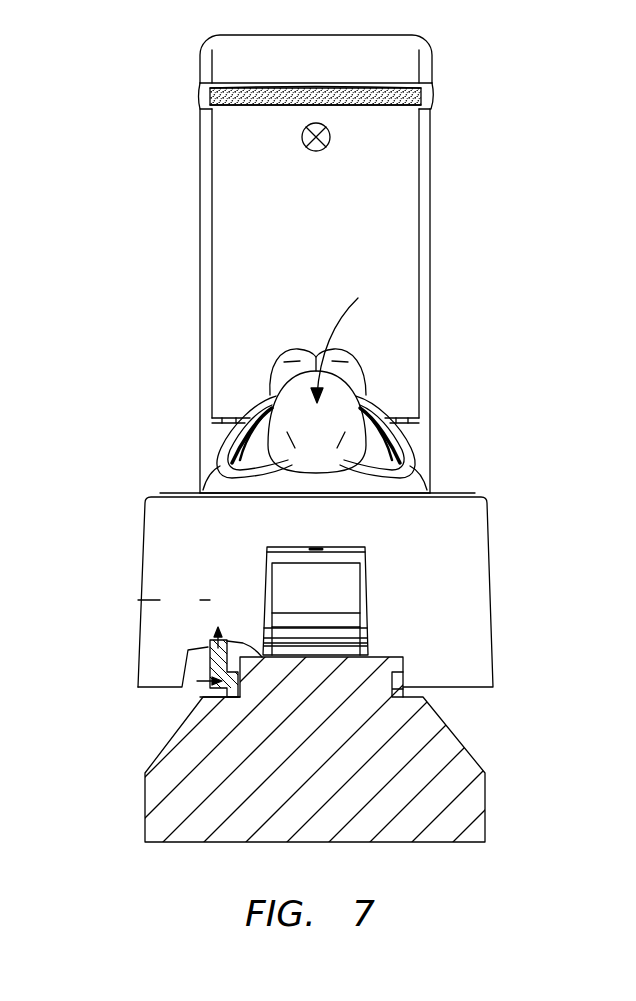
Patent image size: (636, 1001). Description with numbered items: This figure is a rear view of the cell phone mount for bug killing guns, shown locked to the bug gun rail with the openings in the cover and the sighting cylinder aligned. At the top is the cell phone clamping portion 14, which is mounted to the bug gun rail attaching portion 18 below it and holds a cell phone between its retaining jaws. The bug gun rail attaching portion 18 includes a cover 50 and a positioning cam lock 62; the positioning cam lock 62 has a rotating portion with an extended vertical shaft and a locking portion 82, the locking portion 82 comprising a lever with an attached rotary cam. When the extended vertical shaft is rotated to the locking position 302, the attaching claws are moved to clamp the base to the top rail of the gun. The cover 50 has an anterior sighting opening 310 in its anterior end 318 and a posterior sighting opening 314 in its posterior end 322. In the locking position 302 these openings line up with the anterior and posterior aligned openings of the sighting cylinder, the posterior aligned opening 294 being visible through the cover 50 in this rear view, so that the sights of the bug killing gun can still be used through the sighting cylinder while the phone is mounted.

The cell phone clamping portion 14 is at (432, 50).
The locking position 302 is at (358, 342).
The positioning cam lock 62 is at (392, 383).
The locking portion 82 is at (200, 428).
The bug gun rail attaching portion 18 is at (488, 520).
The anterior end 318 is at (147, 510).
The anterior sighting opening 310 is at (297, 556).
The posterior sighting opening 314 is at (367, 560).
The posterior end 322 is at (175, 592).
The cover 50 is at (467, 590).
The posterior aligned opening 294 is at (340, 597).